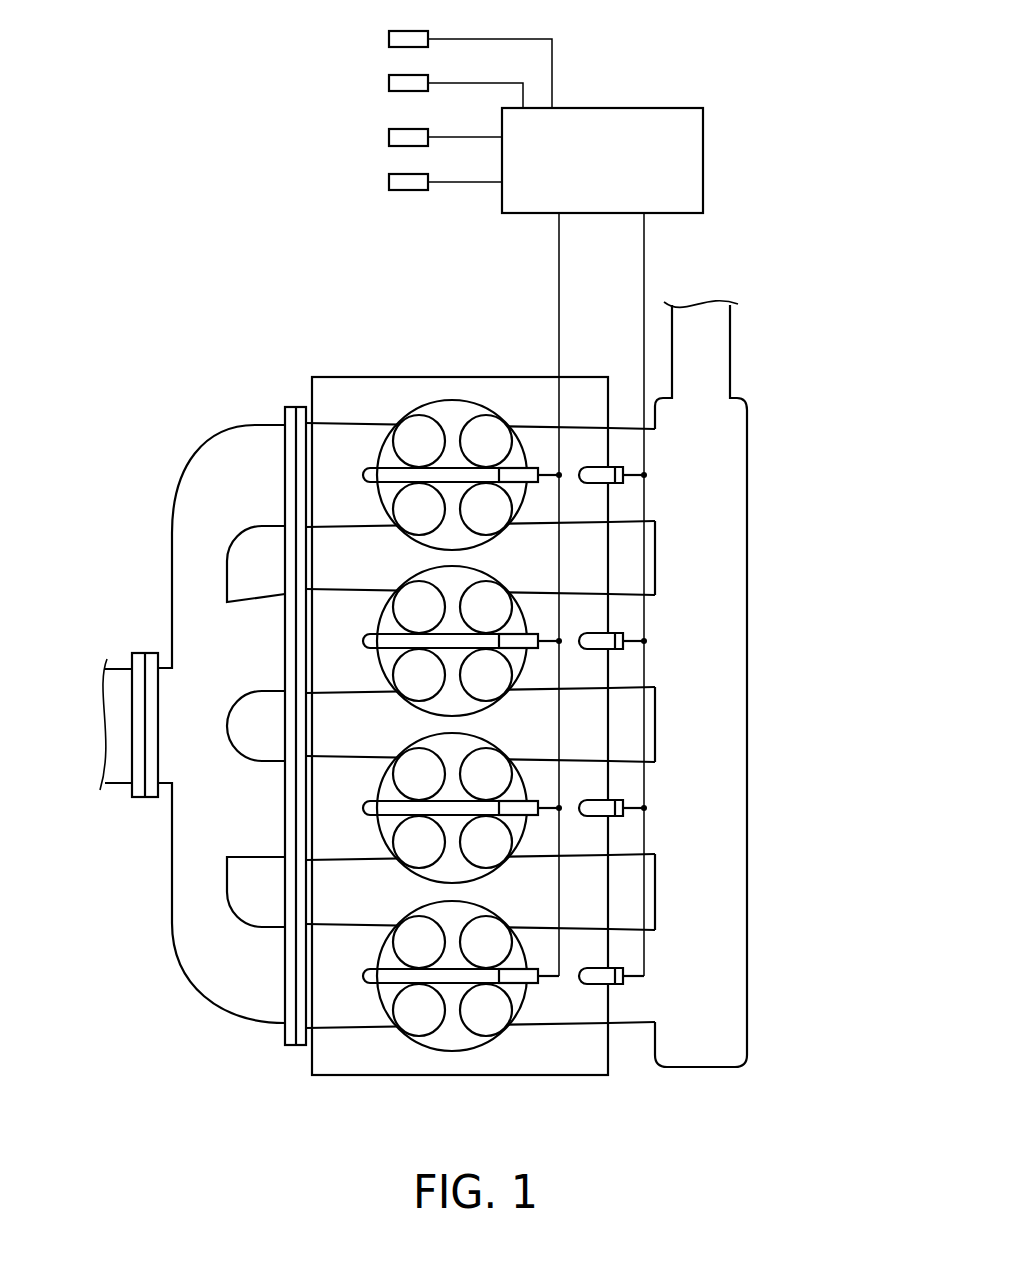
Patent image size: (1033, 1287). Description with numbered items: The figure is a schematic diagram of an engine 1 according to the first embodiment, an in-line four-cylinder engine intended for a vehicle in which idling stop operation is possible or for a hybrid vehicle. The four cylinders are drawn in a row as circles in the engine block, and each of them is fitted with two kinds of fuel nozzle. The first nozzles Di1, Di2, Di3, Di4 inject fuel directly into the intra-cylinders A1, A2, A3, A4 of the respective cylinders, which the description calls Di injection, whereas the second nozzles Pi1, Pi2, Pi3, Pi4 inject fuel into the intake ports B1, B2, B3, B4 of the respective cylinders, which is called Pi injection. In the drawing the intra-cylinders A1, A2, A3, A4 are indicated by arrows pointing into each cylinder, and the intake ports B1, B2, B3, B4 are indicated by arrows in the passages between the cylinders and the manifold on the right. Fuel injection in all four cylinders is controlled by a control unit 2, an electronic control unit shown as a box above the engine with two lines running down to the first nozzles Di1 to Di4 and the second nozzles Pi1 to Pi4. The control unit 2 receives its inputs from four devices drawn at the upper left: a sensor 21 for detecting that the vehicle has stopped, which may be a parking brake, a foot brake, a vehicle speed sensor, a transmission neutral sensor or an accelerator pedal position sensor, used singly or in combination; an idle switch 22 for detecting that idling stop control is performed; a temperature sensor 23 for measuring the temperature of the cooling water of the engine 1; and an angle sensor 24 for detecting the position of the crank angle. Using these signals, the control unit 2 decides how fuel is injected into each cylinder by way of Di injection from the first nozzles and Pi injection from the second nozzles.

The engine 1 is at (764, 208).
The control unit 2 is at (670, 108).
The sensor for detecting that the vehicle has stopped 21 is at (389, 39).
The idle switch 22 is at (389, 83).
The temperature sensor 23 is at (389, 137).
The angle sensor 24 is at (389, 182).
The intra-cylinder A1 is at (457, 423).
The intra-cylinder A2 is at (457, 589).
The intra-cylinder A3 is at (457, 756).
The intra-cylinder A4 is at (457, 924).
The intake port B1 is at (575, 451).
The intake port B2 is at (575, 617).
The intake port B3 is at (575, 784).
The intake port B4 is at (575, 952).
The first nozzle Di1 is at (531, 479).
The first nozzle Di2 is at (531, 645).
The first nozzle Di3 is at (531, 812).
The first nozzle Di4 is at (531, 980).
The second nozzle Pi1 is at (617, 467).
The second nozzle Pi2 is at (617, 633).
The second nozzle Pi3 is at (617, 800).
The second nozzle Pi4 is at (617, 968).